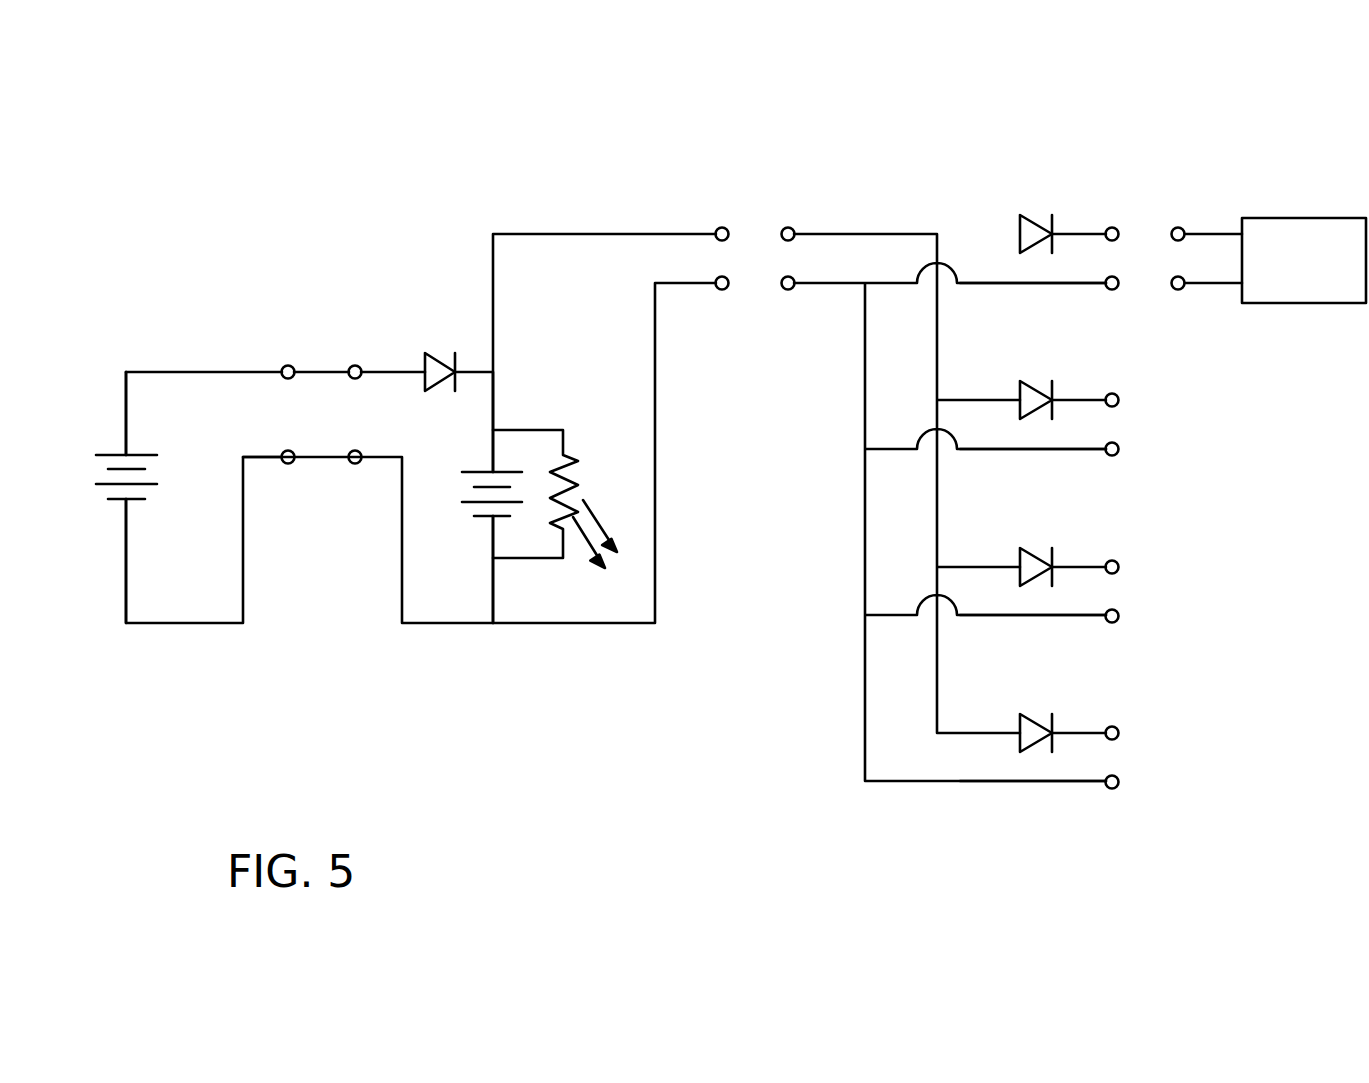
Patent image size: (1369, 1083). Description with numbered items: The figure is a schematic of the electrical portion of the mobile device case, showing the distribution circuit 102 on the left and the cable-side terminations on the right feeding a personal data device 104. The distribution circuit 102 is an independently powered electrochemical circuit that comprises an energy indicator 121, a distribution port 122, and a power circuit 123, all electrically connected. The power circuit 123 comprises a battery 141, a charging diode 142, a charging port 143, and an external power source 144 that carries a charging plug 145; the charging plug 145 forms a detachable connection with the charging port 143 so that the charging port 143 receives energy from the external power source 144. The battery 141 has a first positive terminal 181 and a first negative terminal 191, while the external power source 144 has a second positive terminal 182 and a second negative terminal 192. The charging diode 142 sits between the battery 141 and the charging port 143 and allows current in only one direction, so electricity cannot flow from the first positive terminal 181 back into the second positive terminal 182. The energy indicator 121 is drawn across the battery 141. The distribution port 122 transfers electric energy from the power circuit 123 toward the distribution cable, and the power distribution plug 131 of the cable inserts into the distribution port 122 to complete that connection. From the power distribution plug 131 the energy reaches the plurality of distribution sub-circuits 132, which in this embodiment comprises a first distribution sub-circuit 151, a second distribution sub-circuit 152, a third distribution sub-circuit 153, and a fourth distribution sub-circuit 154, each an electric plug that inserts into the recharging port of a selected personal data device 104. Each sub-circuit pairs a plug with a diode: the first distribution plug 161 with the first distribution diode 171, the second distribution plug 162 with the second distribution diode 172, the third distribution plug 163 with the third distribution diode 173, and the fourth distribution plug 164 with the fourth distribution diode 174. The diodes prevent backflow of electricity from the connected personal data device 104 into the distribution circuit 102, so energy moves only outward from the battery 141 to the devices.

The distribution circuit 102 is at (198, 166).
The personal data device 104 is at (1303, 222).
The energy indicator 121 is at (548, 485).
The distribution port 122 is at (721, 227).
The power circuit 123 is at (345, 580).
The power distribution plug 131 is at (788, 227).
The plurality of distribution sub-circuits 132 is at (1045, 198).
The battery 141 is at (458, 486).
The charging diode 142 is at (433, 360).
The charging port 143 is at (355, 360).
The external power source 144 is at (95, 475).
The charging plug 145 is at (286, 355).
The first distribution sub-circuit 151 is at (1050, 262).
The second distribution sub-circuit 152 is at (1058, 435).
The third distribution sub-circuit 153 is at (1060, 597).
The fourth distribution sub-circuit 154 is at (1062, 765).
The first distribution plug 161 is at (1102, 260).
The second distribution plug 162 is at (1097, 427).
The third distribution plug 163 is at (1100, 593).
The fourth distribution plug 164 is at (1092, 765).
The first distribution diode 171 is at (1030, 213).
The second distribution diode 172 is at (1020, 383).
The third distribution diode 173 is at (1020, 558).
The fourth distribution diode 174 is at (1020, 720).
The first positive terminal 181 is at (492, 448).
The second positive terminal 182 is at (126, 440).
The first negative terminal 191 is at (492, 527).
The second negative terminal 192 is at (126, 520).